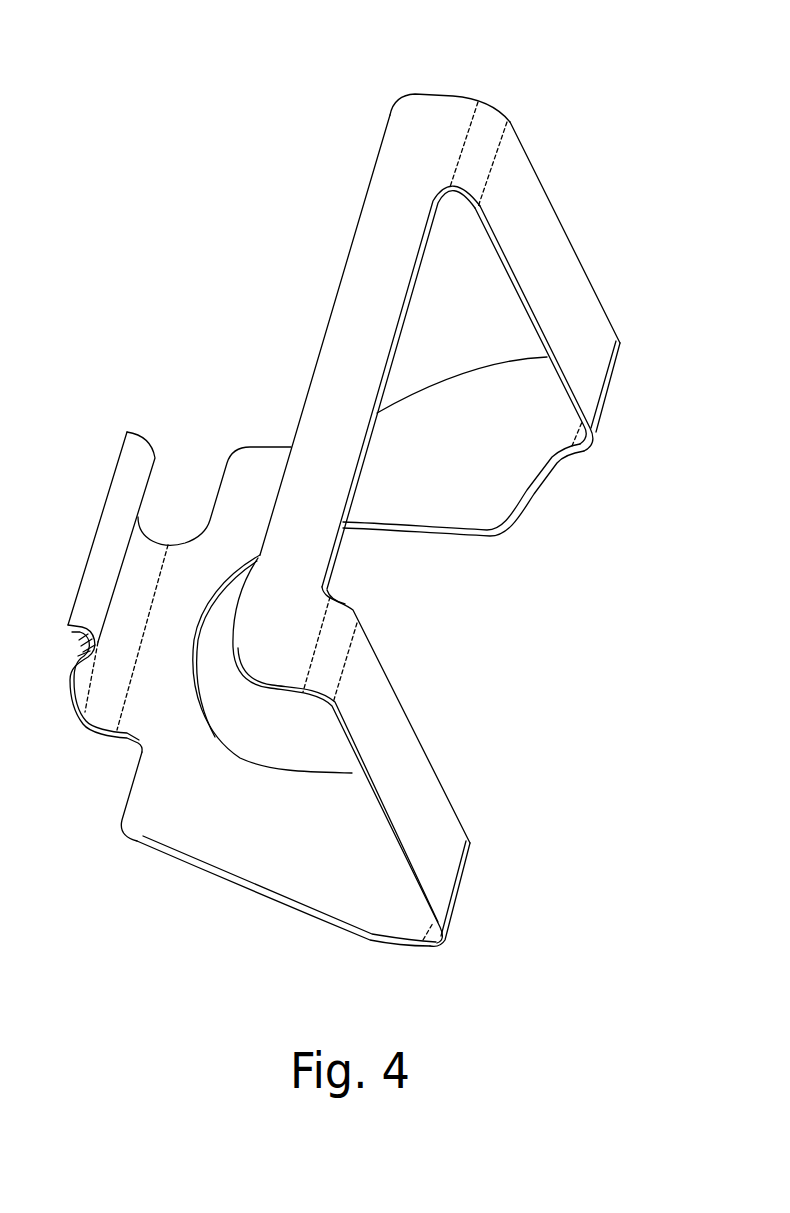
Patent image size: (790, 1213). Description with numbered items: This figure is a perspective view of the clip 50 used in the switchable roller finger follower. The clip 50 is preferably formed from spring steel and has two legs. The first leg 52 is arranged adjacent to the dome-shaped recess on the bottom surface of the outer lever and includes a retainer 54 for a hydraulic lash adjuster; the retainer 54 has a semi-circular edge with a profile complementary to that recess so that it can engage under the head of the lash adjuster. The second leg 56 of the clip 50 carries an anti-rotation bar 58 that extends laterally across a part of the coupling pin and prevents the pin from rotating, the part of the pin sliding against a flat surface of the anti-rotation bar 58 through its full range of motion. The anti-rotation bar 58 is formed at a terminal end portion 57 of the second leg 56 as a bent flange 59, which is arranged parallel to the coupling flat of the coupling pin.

The clip 50 is at (574, 252).
The first leg 52 is at (282, 848).
The retainer 54 is at (372, 531).
The second leg 56 is at (537, 210).
The terminal end portion 57 is at (413, 112).
The anti-rotation bar 58 is at (402, 163).
The bent flange 59 is at (350, 245).